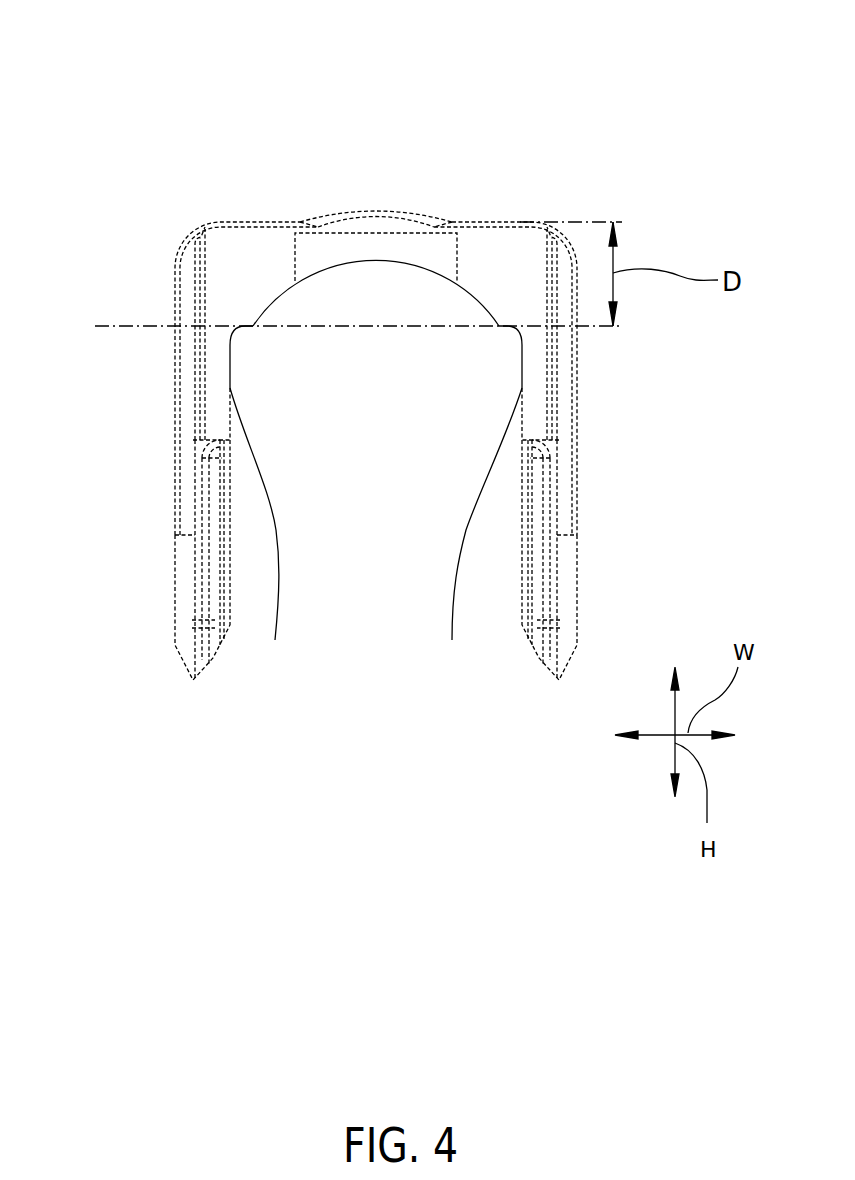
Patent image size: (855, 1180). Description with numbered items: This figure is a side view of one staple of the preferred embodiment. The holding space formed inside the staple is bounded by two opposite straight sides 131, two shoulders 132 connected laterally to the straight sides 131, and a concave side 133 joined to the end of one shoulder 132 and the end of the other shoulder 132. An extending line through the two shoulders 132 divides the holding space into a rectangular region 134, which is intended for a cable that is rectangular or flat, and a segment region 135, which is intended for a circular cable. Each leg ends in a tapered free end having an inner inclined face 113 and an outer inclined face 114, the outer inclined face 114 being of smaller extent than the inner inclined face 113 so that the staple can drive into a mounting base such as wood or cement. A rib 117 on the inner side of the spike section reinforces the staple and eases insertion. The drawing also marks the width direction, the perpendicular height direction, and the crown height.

The inner inclined face 113 is at (210, 667).
The outer inclined face 114 is at (182, 668).
The rib 117 is at (530, 608).
The straight sides 131 is at (275, 640).
The shoulders 132 is at (250, 322).
The concave side 133 is at (375, 258).
The rectangular region 134 is at (376, 577).
The segment region 135 is at (338, 293).